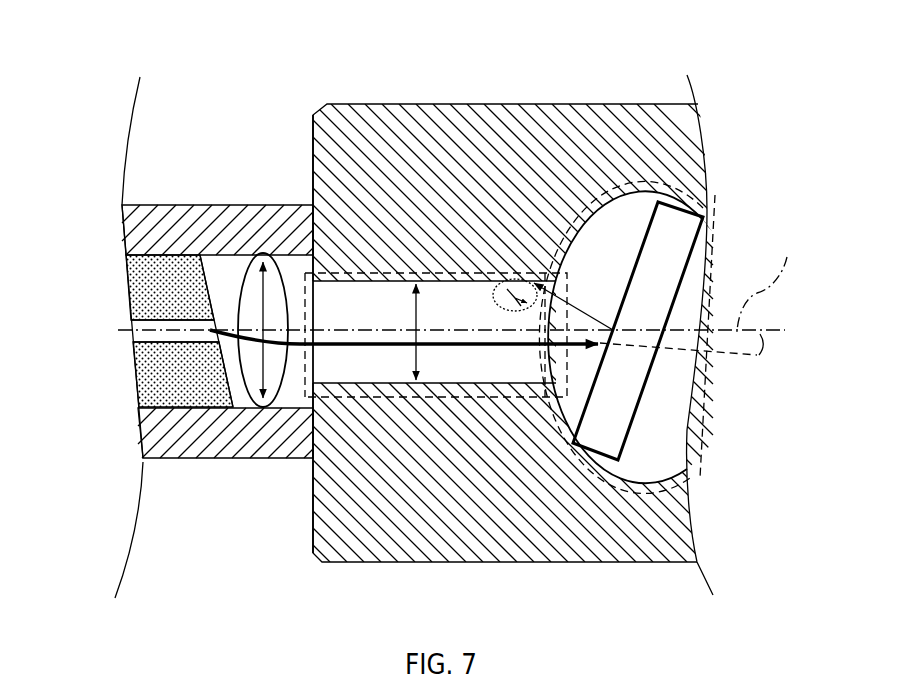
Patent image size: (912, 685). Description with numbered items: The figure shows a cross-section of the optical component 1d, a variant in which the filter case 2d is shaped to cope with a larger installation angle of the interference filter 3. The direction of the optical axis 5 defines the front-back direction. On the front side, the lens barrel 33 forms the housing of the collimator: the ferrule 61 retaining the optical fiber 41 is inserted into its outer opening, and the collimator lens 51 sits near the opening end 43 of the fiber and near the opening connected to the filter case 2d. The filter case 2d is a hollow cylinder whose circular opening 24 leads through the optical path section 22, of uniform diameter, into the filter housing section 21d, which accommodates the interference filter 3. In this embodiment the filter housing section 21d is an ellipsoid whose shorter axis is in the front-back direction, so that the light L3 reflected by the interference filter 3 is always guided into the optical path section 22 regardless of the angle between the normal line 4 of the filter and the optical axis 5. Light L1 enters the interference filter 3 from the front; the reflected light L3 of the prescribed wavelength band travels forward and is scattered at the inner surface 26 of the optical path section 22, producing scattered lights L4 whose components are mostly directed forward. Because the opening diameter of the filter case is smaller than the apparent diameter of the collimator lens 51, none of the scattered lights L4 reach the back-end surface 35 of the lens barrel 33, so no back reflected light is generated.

The optical component 1d is at (567, 88).
The filter case 2d is at (390, 120).
The interference filter 3 is at (690, 240).
The normal line 4 is at (727, 352).
The optical axis 5 is at (763, 279).
The filter housing section 21d is at (708, 448).
The optical path section 22 is at (305, 395).
The opening 24 is at (306, 300).
The inner surface 26 is at (388, 285).
The lens barrel 33 is at (202, 223).
The back-end surface 35 is at (317, 232).
The optical fiber 41 is at (142, 312).
The opening end 43 is at (190, 343).
The collimator lens 51 is at (247, 256).
The ferrule 61 is at (152, 392).
The light L1 is at (462, 350).
The reflected light L3 is at (583, 307).
The scattered lights L4 is at (495, 298).